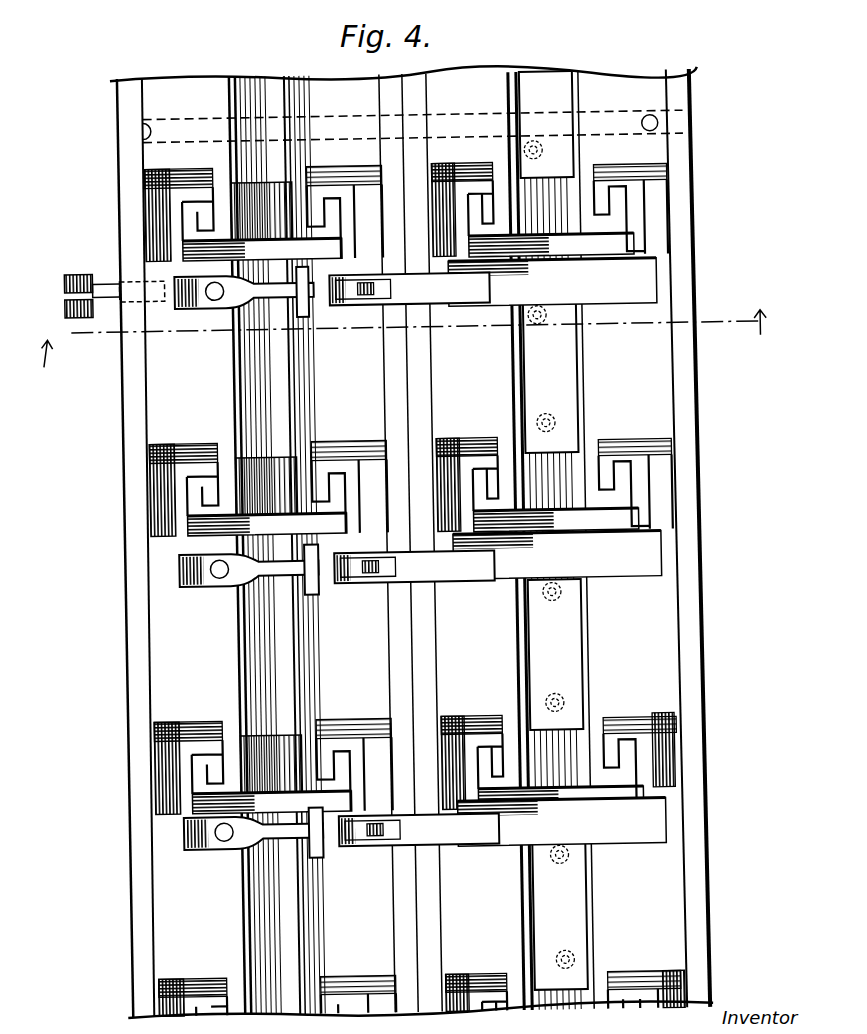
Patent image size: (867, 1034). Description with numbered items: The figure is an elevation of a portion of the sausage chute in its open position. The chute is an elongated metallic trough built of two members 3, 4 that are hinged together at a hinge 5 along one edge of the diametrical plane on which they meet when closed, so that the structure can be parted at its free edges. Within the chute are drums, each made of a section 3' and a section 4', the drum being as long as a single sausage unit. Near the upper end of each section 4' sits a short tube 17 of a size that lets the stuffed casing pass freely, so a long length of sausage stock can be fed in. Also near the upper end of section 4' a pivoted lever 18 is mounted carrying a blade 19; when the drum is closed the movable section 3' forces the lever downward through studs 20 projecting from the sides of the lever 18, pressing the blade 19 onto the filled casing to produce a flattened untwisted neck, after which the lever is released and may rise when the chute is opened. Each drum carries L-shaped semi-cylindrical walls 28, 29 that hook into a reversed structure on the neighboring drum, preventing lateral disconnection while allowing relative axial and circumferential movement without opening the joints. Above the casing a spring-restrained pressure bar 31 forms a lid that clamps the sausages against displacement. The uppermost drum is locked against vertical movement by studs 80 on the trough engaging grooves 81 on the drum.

The chute member 3 is at (706, 537).
The drum section 3' is at (609, 539).
The chute member 4 is at (123, 548).
The drum section 4' is at (263, 546).
The hinge 5 is at (404, 339).
The short tube 17 is at (262, 211).
The pivoted lever 18 is at (204, 578).
The blade 19 is at (282, 566).
The studs 20 is at (307, 280).
The semi-cylindrical wall 28 is at (613, 486).
The semi-cylindrical wall 29 is at (649, 514).
The pressure bar 31 is at (291, 346).
The studs 80 is at (149, 129).
The grooves 81 is at (187, 119).